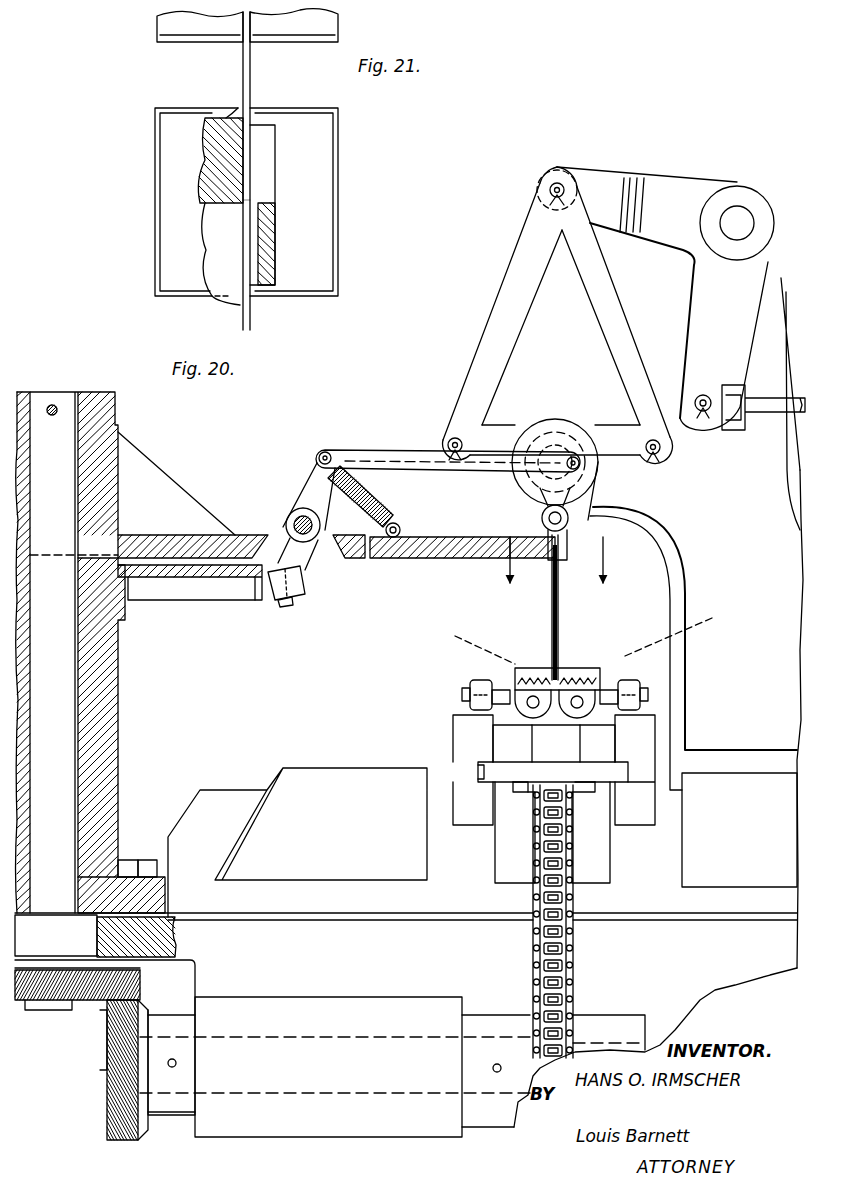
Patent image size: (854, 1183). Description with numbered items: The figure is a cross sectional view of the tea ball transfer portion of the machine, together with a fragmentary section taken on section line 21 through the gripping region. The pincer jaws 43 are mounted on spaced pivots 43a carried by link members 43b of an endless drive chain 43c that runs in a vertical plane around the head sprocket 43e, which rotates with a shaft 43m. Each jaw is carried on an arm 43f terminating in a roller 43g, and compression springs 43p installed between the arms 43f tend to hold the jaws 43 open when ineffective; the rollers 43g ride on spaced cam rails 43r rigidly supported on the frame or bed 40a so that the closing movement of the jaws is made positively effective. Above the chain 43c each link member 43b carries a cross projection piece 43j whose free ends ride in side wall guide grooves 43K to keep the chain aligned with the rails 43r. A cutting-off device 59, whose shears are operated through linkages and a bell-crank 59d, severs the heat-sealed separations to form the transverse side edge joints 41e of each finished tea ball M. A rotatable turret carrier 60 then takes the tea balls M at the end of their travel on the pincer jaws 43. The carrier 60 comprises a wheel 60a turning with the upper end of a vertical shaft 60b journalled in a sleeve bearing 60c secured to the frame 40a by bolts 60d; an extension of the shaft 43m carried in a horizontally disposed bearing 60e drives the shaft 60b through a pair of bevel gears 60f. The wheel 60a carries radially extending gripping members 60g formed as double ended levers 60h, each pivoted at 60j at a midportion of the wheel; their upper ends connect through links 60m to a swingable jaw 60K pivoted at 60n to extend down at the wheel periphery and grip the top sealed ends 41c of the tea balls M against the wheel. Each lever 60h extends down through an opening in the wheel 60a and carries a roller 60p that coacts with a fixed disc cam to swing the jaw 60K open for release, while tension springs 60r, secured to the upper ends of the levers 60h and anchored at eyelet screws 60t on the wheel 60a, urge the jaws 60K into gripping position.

In FIG. 20, the section line 21— 21 is at (557, 578).
In FIG. 20, the frame or bed 40a is at (468, 842).
In FIG. 21, the top sealed ends 41c is at (252, 222).
In FIG. 20, the top sealed ends 41c is at (565, 553).
In FIG. 21, the transverse side edge joints 41e is at (252, 87).
In FIG. 21, the pincer jaws 43 is at (318, 220).
In FIG. 20, the pincer jaws 43 is at (533, 662).
In FIG. 20, the pivots 43a is at (526, 707).
In FIG. 20, the link members 43b is at (556, 743).
In FIG. 20, the endless drive chain 43c is at (548, 857).
In FIG. 20, the head sprocket 43e is at (562, 887).
In FIG. 20, the arm 43f is at (492, 732).
In FIG. 20, the roller 43g is at (481, 680).
In FIG. 20, the cross projection piece 43j is at (500, 773).
In FIG. 20, the side wall guide grooves 43K is at (478, 767).
In FIG. 20, the shaft 43m is at (103, 1067).
In FIG. 20, the compression springs 43p is at (583, 636).
In FIG. 20, the cam rails 43r is at (453, 735).
In FIG. 20, the cutting-off device 59 is at (503, 272).
In FIG. 20, the bell-crank 59d is at (681, 285).
In FIG. 20, the rotatable turret carrier 60 is at (188, 464).
In FIG. 20, the wheel 60a is at (200, 535).
In FIG. 20, the vertical shaft 60b is at (55, 775).
In FIG. 20, the sleeve bearing 60c is at (100, 697).
In FIG. 20, the bolts 60d is at (136, 860).
In FIG. 20, the horizontally disposed bearing 60e is at (323, 1125).
In FIG. 20, the bevel gears 60f is at (93, 1010).
In FIG. 20, the gripping members 60g is at (207, 580).
In FIG. 20, the double ended levers 60h is at (308, 472).
In FIG. 20, the pivot 60j is at (312, 533).
In FIG. 21, the swingable jaw 60K is at (277, 262).
In FIG. 20, the swingable jaw 60K is at (600, 506).
In FIG. 20, the links 60m is at (441, 442).
In FIG. 20, the jaw pivot 60n is at (541, 522).
In FIG. 20, the roller 60p is at (296, 597).
In FIG. 20, the tension springs 60r is at (385, 507).
In FIG. 20, the eyelet screw 60t is at (401, 529).
In FIG. 21, the tea ball M is at (256, 318).